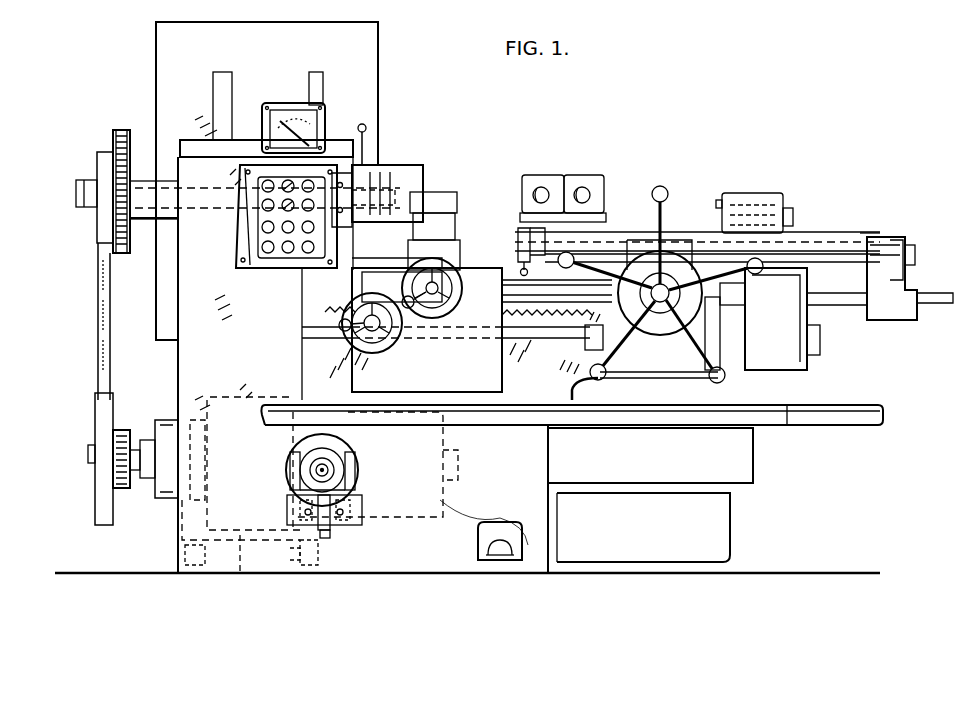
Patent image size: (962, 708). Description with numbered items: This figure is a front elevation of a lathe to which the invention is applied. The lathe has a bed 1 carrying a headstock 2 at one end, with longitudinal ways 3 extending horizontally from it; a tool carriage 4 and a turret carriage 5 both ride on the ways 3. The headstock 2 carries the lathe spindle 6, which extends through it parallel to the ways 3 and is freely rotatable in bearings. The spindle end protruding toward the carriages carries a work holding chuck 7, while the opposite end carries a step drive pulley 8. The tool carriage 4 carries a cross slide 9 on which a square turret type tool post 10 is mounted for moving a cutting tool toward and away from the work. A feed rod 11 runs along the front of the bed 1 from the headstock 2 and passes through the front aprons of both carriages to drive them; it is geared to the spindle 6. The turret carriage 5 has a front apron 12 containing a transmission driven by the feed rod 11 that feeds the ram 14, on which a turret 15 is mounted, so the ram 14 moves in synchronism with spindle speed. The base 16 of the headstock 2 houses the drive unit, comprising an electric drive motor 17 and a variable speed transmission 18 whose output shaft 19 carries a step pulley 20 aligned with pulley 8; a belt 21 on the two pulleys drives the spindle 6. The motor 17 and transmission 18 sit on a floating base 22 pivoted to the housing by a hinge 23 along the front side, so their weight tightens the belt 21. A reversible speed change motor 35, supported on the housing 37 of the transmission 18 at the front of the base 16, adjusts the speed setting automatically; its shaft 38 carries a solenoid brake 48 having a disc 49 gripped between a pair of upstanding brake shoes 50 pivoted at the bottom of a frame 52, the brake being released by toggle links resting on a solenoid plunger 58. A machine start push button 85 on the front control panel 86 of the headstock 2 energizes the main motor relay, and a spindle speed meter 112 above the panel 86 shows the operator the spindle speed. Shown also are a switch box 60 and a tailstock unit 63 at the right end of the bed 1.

The bed 1 is at (532, 556).
The headstock 2 is at (182, 268).
The longitudinal ways 3 is at (522, 285).
The tool carriage 4 is at (392, 272).
The turret carriage 5 is at (593, 283).
The lathe spindle 6 is at (205, 190).
The work holding chuck 7 is at (405, 166).
The step drive pulley 8 is at (97, 160).
The cross slide 9 is at (458, 243).
The square turret type tool post 10 is at (442, 192).
The feed rod 11 is at (528, 342).
The front apron 12 is at (676, 366).
The ram 14 is at (688, 232).
The turret 15 is at (590, 176).
The base of headstock 16 is at (336, 560).
The electric drive motor 17 is at (398, 512).
The variable speed transmission 18 is at (226, 397).
The output shaft 19 is at (135, 450).
The step pulley 20 is at (97, 488).
The belt 21 is at (98, 334).
The floating base 22 is at (241, 565).
The hinge 23 is at (183, 555).
The reversible speed change motor 35 is at (352, 452).
The transmission housing 37 is at (210, 508).
The shaft of control motor 38 is at (316, 470).
The solenoid brake 48 is at (296, 456).
The brake disc 49 is at (340, 467).
The brake shoes 50 is at (346, 480).
The brake frame 52 is at (288, 505).
The solenoid plunger 58 is at (332, 534).
The switch box 60 is at (762, 206).
The tailstock 63 is at (833, 241).
The machine start push button 85 is at (264, 186).
The front control panel 86 is at (258, 237).
The spindle speed meter 112 is at (290, 105).